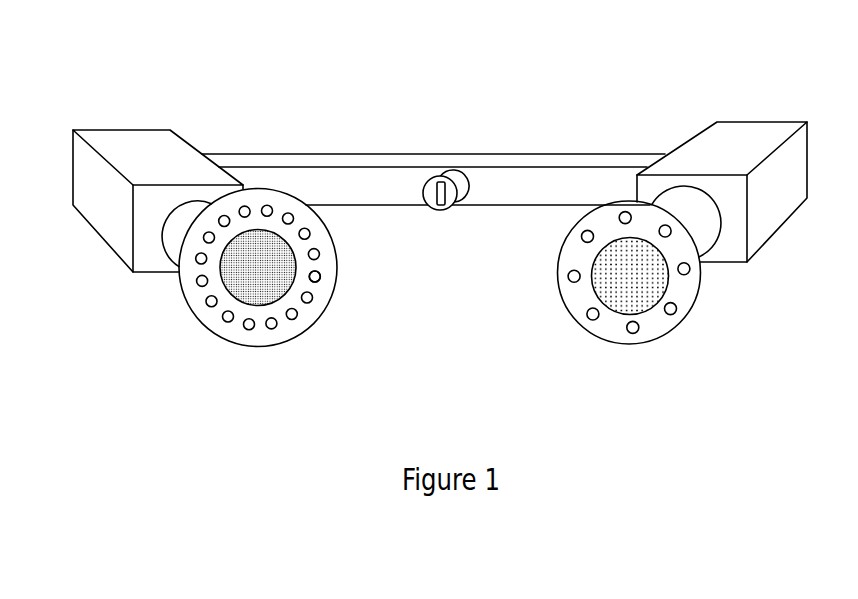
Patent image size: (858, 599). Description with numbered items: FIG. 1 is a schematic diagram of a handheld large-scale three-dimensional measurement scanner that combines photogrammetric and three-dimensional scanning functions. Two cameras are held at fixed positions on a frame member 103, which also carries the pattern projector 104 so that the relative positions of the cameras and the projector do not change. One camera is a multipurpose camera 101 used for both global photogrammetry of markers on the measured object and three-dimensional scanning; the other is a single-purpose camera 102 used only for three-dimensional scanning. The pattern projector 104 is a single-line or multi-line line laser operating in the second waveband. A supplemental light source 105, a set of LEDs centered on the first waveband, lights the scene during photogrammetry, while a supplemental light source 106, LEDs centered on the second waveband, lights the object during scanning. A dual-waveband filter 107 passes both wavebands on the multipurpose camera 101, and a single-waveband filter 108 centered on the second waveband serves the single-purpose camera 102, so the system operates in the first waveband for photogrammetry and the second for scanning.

The multipurpose camera 101 is at (157, 152).
The single-purpose camera 102 is at (718, 155).
The frame member 103 is at (518, 158).
The pattern projector 104 is at (448, 210).
The supplemental light source 105 is at (320, 279).
The supplemental light source 106 is at (287, 212).
The dual-waveband filter 107 is at (260, 288).
The single-waveband filter 108 is at (620, 289).